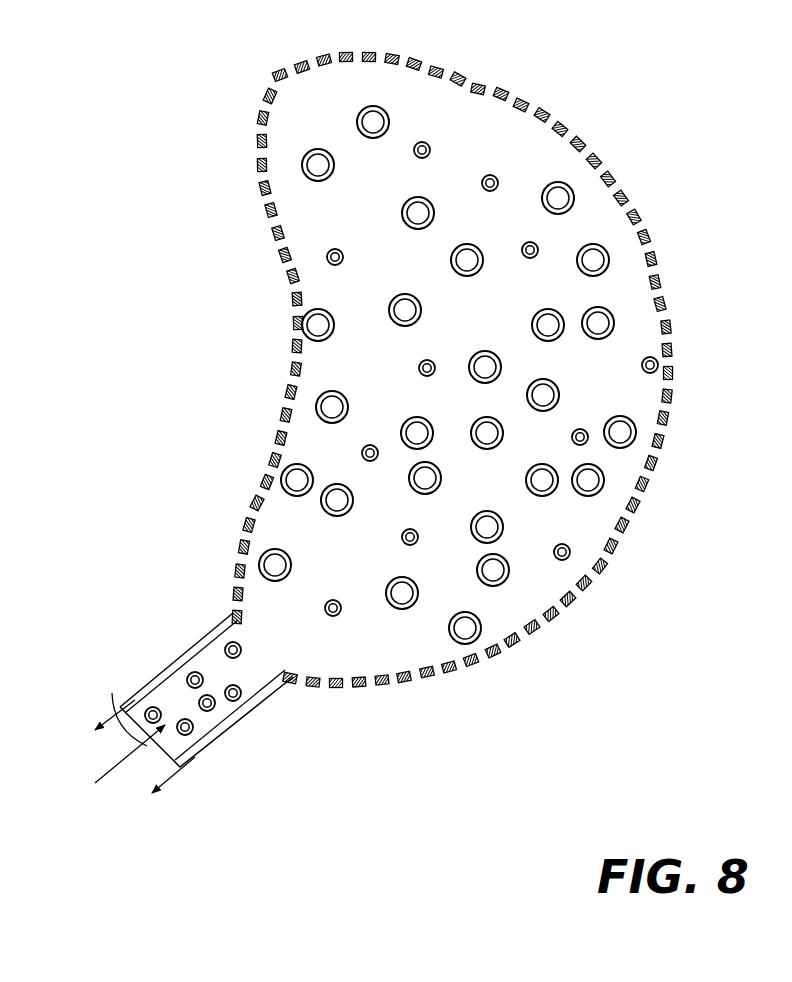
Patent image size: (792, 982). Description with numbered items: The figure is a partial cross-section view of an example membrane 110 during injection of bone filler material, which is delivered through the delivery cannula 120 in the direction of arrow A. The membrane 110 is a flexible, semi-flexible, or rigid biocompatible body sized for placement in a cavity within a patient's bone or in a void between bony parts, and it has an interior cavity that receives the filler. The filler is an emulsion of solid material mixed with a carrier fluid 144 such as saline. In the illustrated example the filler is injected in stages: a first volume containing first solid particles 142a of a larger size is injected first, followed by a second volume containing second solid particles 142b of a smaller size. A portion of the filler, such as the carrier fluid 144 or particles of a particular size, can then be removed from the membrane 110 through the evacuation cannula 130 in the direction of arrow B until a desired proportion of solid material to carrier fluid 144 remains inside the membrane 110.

The membrane 110 is at (537, 628).
The delivery cannula 120 is at (235, 732).
The evacuation cannula 130 is at (168, 660).
The first solid particle 142a is at (510, 572).
The second solid particle 142b is at (572, 550).
The carrier fluid 144 is at (623, 293).
The arrow A is at (102, 776).
The arrow B is at (203, 757).